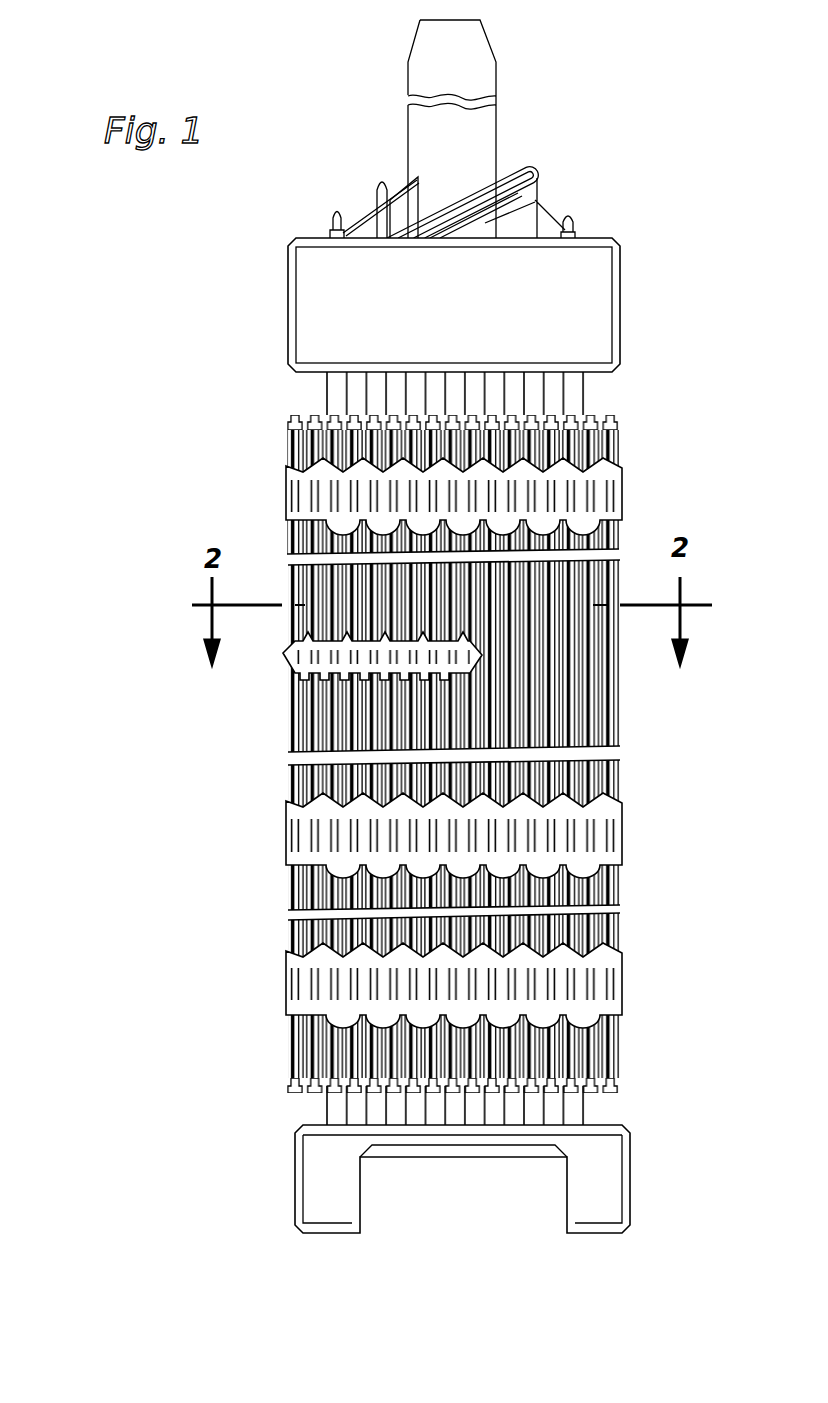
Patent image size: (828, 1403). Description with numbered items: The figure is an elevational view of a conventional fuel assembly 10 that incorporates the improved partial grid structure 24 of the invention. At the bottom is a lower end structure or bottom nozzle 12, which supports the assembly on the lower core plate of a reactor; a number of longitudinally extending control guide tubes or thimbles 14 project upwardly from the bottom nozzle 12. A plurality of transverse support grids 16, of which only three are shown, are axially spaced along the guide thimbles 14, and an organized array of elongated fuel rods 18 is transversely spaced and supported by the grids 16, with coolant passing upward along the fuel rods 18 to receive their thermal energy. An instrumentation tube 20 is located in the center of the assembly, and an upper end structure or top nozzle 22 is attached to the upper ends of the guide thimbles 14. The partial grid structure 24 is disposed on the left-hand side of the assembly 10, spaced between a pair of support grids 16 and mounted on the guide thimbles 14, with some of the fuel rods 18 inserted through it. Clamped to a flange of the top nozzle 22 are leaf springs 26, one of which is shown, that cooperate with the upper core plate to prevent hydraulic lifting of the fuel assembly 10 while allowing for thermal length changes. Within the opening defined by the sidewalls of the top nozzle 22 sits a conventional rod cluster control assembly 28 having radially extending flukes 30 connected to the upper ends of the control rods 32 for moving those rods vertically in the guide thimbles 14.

The fuel assembly 10 is at (388, 30).
The bottom nozzle 12 is at (618, 1184).
The control guide thimbles 14 is at (325, 392).
The support grids 16 is at (620, 496).
The fuel rods 18 is at (613, 443).
The instrumentation tube 20 is at (463, 1113).
The top nozzle 22 is at (588, 300).
The partial grid structure 24 is at (278, 674).
The leaf springs 26 is at (520, 158).
The rod cluster control assembly 28 is at (487, 118).
The flukes 30 is at (551, 212).
The control rods 32 is at (577, 224).